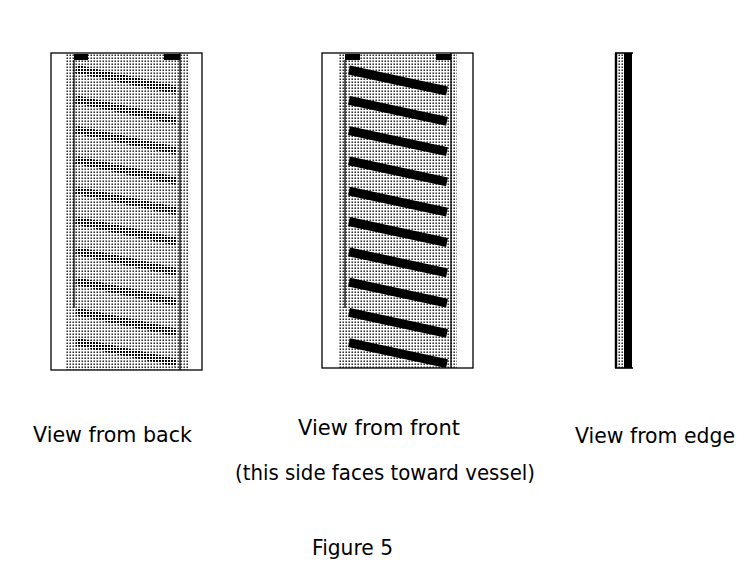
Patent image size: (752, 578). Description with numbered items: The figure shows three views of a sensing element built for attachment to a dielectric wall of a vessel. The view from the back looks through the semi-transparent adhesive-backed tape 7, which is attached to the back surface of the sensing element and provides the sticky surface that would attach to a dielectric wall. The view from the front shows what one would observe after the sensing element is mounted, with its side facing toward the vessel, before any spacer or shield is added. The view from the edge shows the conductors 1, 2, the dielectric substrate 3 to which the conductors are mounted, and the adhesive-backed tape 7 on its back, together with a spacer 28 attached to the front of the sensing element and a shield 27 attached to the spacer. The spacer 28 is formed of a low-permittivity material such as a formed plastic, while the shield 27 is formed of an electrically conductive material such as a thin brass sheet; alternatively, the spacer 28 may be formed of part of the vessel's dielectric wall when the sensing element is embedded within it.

The conductor 1 is at (350, 193).
The conductor 2 is at (159, 112).
The dielectric substrate 3 is at (190, 66).
The adhesive-backed tape 7 is at (204, 181).
The shield 27 is at (634, 88).
The spacer 28 is at (621, 372).